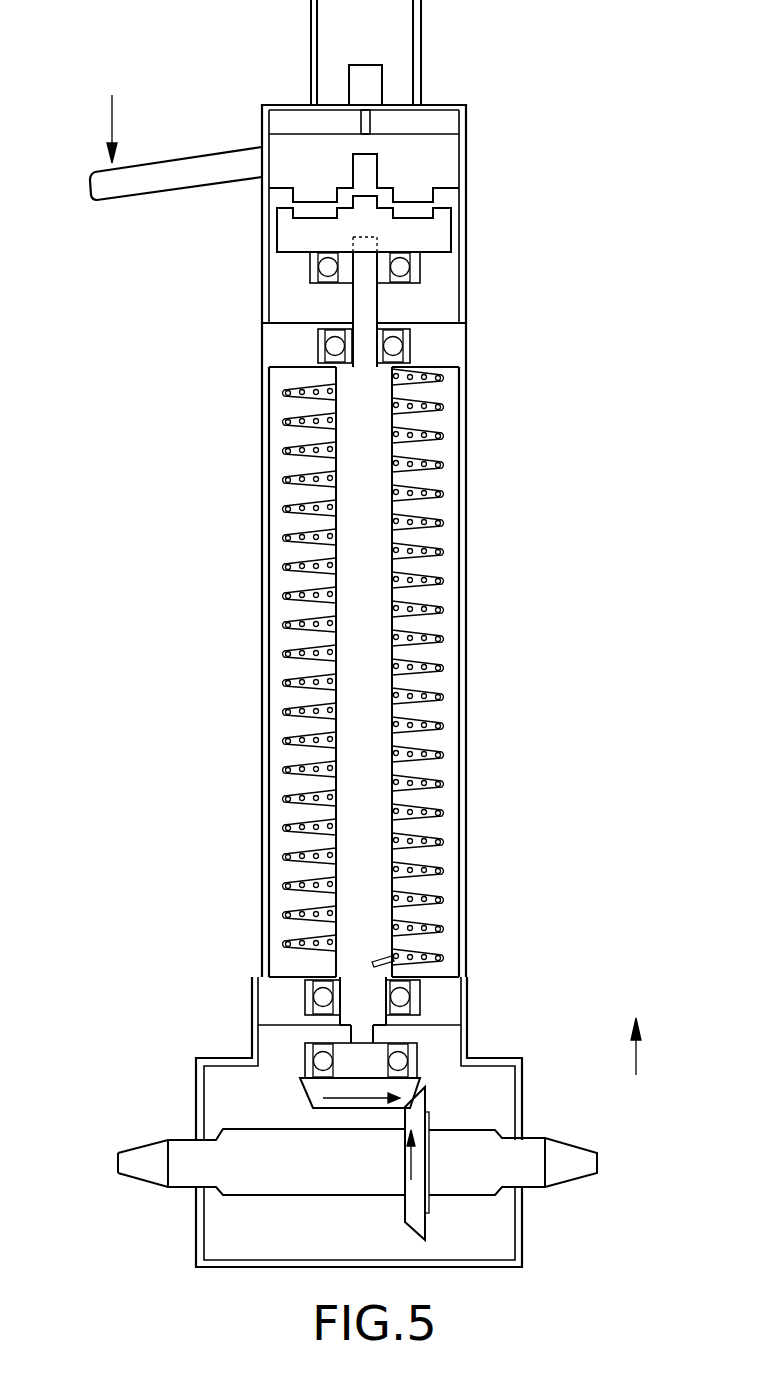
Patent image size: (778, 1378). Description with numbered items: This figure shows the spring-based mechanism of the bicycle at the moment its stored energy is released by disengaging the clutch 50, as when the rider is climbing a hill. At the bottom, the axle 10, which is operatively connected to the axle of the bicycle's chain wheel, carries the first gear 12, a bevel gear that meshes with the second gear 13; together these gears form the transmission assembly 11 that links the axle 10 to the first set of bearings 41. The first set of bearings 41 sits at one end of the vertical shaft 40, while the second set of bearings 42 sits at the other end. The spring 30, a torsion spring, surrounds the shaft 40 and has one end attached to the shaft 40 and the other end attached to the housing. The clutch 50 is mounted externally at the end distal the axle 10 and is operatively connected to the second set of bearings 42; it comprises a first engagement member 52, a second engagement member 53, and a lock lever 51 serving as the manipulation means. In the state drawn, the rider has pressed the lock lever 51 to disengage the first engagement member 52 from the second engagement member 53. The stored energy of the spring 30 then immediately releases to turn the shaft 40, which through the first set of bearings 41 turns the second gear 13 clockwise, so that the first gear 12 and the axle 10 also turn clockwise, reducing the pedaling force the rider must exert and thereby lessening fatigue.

The axle 10 is at (512, 1163).
The transmission assembly 11 is at (127, 944).
The first gear 12 is at (405, 1165).
The second gear 13 is at (315, 1090).
The spring 30 is at (440, 582).
The shaft 40 is at (363, 692).
The first set of bearings 41 is at (367, 1063).
The second set of bearings 42 is at (415, 282).
The clutch 50 is at (467, 180).
The lock lever 51 is at (135, 187).
The first engagement member 52 is at (438, 233).
The second engagement member 53 is at (424, 160).